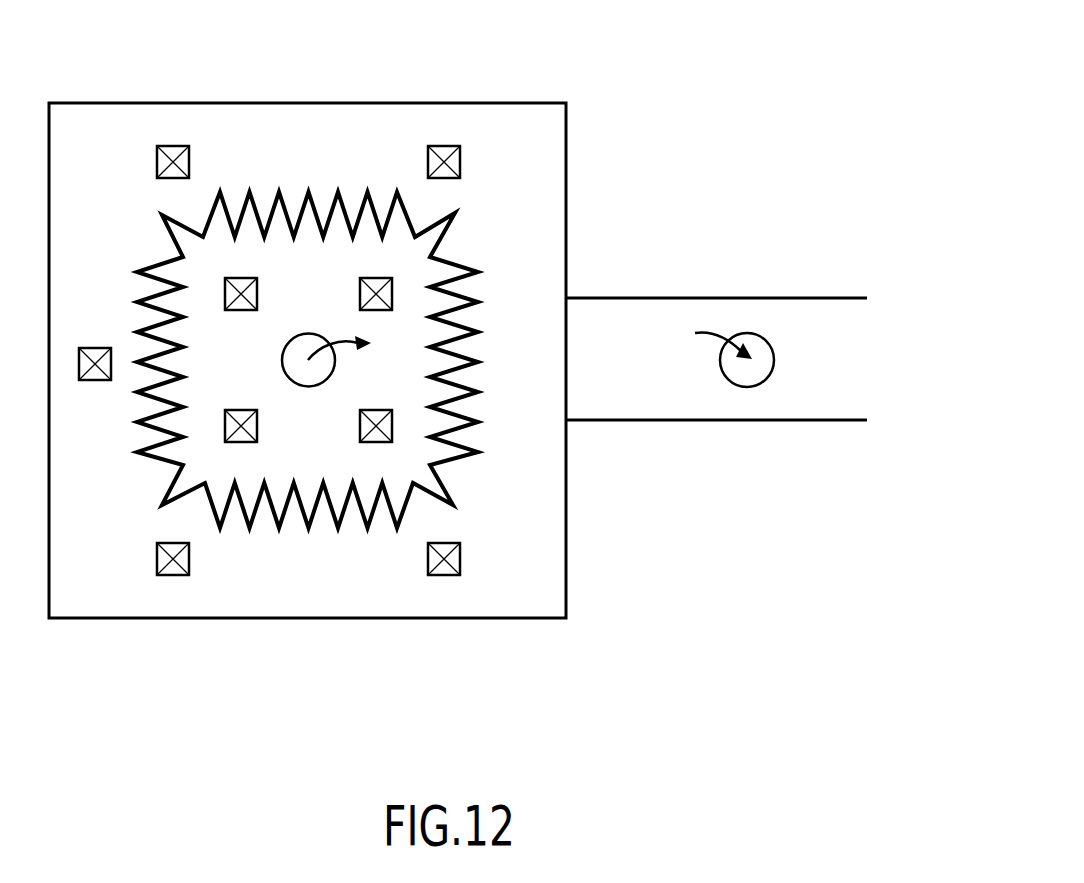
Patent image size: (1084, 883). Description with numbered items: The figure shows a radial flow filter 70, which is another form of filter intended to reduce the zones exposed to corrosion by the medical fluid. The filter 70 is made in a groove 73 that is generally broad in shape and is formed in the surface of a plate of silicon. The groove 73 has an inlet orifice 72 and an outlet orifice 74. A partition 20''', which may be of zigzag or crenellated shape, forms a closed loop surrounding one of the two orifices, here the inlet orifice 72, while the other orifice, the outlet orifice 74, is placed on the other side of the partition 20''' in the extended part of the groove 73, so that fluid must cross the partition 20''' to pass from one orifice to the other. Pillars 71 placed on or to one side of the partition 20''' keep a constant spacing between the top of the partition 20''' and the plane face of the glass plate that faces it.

The radial flow filter 70 is at (612, 214).
The pillars 71 is at (175, 148).
The inlet orifice 72 is at (318, 375).
The groove 73 is at (548, 500).
The outlet orifice 74 is at (748, 380).
The partition 20''' is at (307, 276).